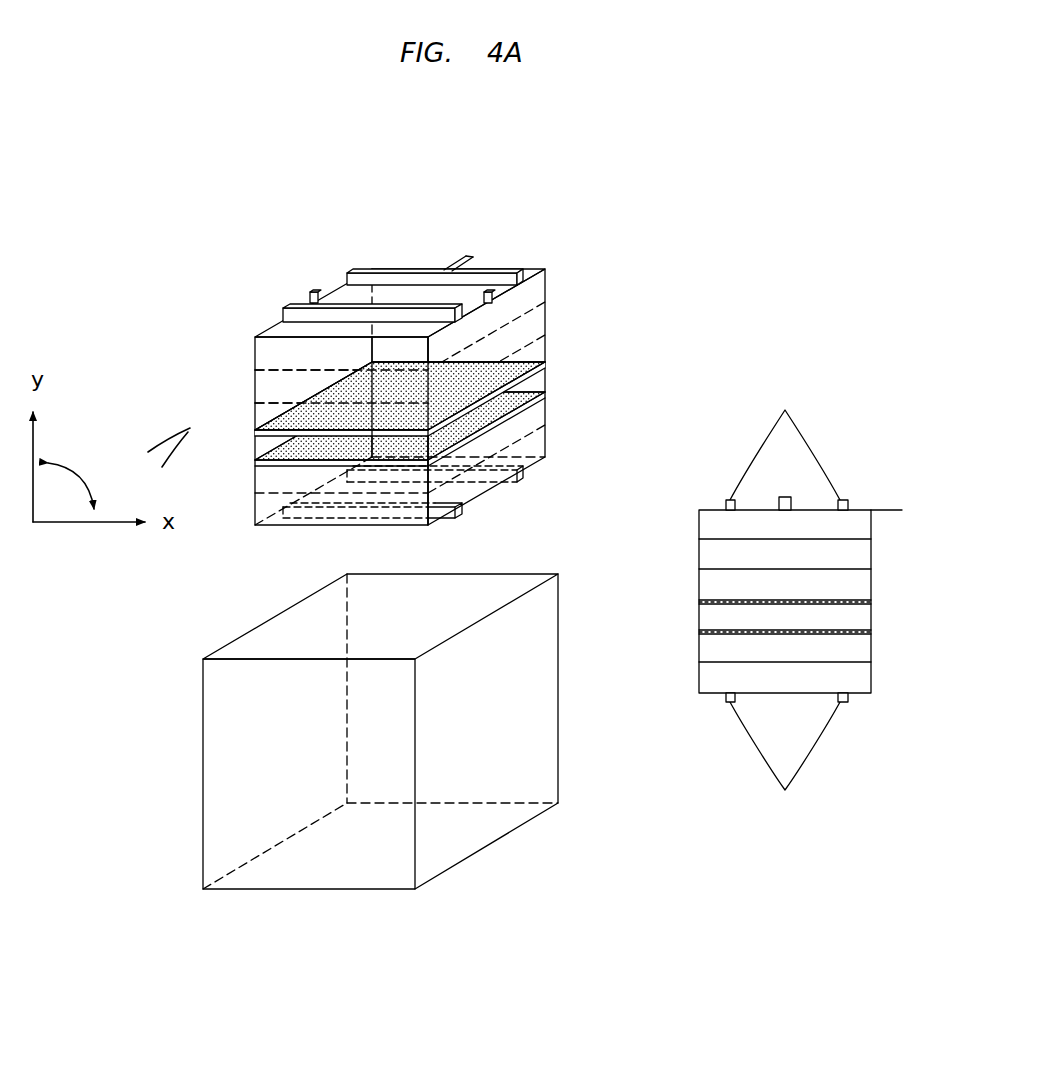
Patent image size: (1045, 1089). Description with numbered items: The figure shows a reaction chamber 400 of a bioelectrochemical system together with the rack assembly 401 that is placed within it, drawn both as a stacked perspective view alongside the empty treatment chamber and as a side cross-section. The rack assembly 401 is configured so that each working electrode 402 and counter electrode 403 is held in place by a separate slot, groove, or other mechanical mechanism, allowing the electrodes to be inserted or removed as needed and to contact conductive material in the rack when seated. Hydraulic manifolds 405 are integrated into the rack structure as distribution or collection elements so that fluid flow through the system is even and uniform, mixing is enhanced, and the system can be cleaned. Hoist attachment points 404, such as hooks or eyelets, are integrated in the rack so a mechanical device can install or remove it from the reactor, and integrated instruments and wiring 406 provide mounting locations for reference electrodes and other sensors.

The reaction chamber 400 is at (268, 632).
The rack assembly 401 is at (268, 352).
The working electrode 402 is at (262, 432).
The counter electrode 403 is at (262, 462).
The hoist attachment point 404 is at (318, 296).
The hydraulic manifold 405 is at (462, 317).
The integrated instruments and wiring 406 is at (472, 257).